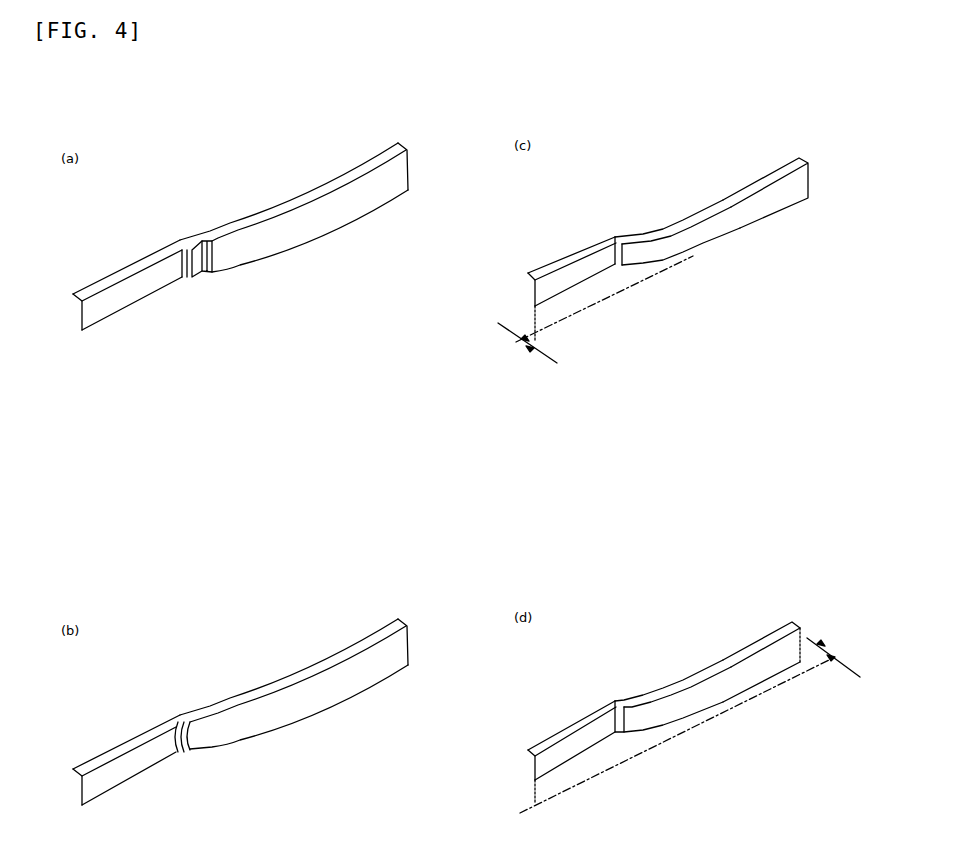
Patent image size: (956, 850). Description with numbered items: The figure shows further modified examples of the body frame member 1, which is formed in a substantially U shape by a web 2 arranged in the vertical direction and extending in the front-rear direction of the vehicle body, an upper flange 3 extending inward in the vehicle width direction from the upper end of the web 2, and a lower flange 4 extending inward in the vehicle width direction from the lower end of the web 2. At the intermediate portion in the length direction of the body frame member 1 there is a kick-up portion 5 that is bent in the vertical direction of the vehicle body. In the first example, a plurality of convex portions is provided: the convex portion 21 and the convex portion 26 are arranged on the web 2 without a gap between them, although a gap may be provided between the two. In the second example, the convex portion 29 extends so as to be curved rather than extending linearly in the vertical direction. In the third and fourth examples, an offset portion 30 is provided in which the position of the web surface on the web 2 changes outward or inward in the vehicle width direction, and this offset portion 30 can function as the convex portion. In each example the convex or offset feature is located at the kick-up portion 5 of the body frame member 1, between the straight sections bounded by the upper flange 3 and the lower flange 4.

The body frame member 1 is at (435, 460).
The web 2 is at (136, 293).
The upper flange 3 is at (105, 281).
The lower flange 4 is at (74, 325).
The kick-up portion 5 is at (457, 473).
The convex portion 21 is at (191, 283).
The convex portion 26 is at (214, 278).
The convex portion 29 is at (189, 758).
The offset portion 30 is at (620, 236).